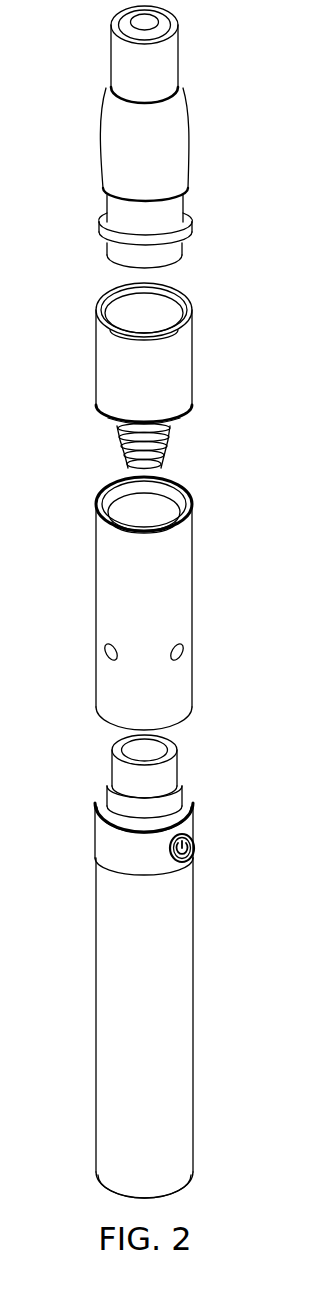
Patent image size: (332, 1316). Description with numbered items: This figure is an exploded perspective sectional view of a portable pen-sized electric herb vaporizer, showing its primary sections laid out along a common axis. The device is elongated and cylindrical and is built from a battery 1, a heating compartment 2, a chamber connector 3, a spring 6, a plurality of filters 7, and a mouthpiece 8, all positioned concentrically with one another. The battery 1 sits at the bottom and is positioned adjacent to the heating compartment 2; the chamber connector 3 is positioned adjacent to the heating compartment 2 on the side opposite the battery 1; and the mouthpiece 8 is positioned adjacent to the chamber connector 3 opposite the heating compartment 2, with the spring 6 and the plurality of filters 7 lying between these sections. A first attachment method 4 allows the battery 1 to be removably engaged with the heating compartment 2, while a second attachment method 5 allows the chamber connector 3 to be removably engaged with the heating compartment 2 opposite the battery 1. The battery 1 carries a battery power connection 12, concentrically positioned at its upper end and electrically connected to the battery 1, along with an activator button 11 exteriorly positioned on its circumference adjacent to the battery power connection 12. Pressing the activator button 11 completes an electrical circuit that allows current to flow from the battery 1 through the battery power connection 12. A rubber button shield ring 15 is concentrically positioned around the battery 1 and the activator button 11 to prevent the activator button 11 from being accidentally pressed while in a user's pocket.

The battery 1 is at (201, 995).
The heating compartment 2 is at (201, 642).
The chamber connector 3 is at (197, 377).
The first attachment method 4 is at (193, 805).
The second attachment method 5 is at (192, 500).
The spring 6 is at (167, 443).
The plurality of filters 7 is at (177, 252).
The mouthpiece 8 is at (204, 135).
The activator button 11 is at (197, 852).
The battery power connection 12 is at (111, 748).
The button shield ring 15 is at (97, 835).